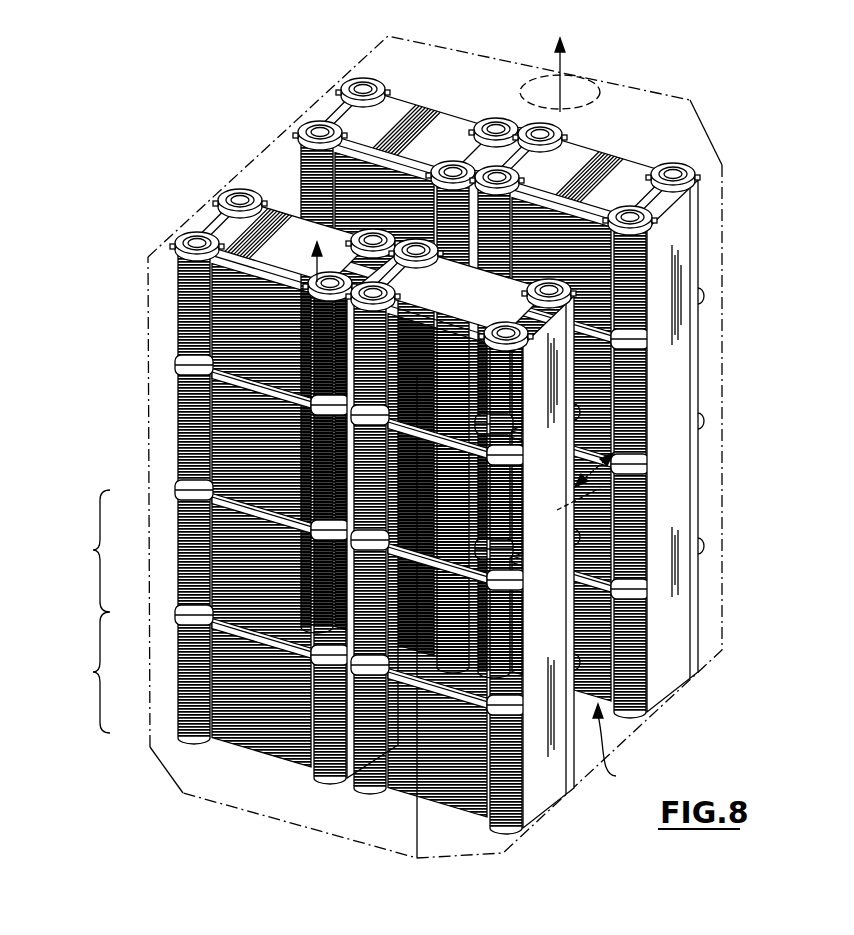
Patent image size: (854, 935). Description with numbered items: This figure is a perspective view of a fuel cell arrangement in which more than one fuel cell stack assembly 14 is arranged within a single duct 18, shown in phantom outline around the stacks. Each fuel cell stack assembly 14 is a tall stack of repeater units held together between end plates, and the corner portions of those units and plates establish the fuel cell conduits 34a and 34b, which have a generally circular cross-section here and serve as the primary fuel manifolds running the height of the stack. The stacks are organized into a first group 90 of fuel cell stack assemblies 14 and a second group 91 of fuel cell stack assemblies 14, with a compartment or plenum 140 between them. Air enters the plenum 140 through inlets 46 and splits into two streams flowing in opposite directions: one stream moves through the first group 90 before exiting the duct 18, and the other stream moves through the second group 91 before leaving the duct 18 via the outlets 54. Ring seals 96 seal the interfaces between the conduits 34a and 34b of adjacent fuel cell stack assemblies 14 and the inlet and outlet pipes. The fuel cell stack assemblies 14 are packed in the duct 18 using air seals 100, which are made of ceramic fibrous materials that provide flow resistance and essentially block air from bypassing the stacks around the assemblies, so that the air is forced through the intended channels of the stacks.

The fuel cell stack assembly 14 is at (98, 550).
The duct 18 is at (695, 142).
The fuel cell conduit 34a is at (660, 214).
The fuel cell conduit 34b is at (553, 288).
The air inlet 46 is at (303, 173).
The air outlet 54 is at (575, 86).
The first group of fuel cell stack assemblies 90 is at (500, 297).
The second group of fuel cell stack assemblies 91 is at (612, 186).
The ring seal 96 is at (176, 633).
The air seal 100 is at (203, 213).
The plenum 140 is at (624, 745).